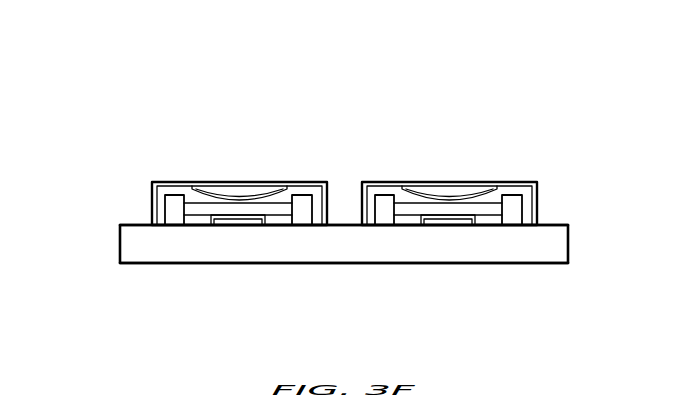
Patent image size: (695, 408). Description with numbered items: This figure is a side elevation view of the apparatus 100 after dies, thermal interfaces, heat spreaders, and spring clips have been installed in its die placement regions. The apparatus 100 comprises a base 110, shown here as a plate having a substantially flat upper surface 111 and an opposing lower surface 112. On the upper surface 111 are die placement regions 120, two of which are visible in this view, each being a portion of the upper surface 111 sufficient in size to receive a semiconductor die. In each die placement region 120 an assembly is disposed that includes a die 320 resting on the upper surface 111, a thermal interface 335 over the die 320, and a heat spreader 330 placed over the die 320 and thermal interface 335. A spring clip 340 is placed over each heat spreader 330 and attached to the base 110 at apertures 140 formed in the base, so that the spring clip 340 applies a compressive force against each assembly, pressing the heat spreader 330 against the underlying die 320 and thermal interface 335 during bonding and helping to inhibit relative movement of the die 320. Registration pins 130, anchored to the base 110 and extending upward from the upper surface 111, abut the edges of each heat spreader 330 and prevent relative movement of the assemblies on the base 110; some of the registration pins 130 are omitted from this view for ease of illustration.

The apparatus 100 is at (610, 123).
The base 110 is at (568, 242).
The upper surface 111 is at (557, 225).
The lower surface 112 is at (556, 264).
The die placement region 120 is at (330, 155).
The registration pins 130 is at (173, 196).
The apertures 140 is at (152, 223).
The die 320 is at (250, 218).
The heat spreader 330 is at (287, 208).
The thermal interface 335 is at (221, 218).
The spring clip 340 is at (238, 182).